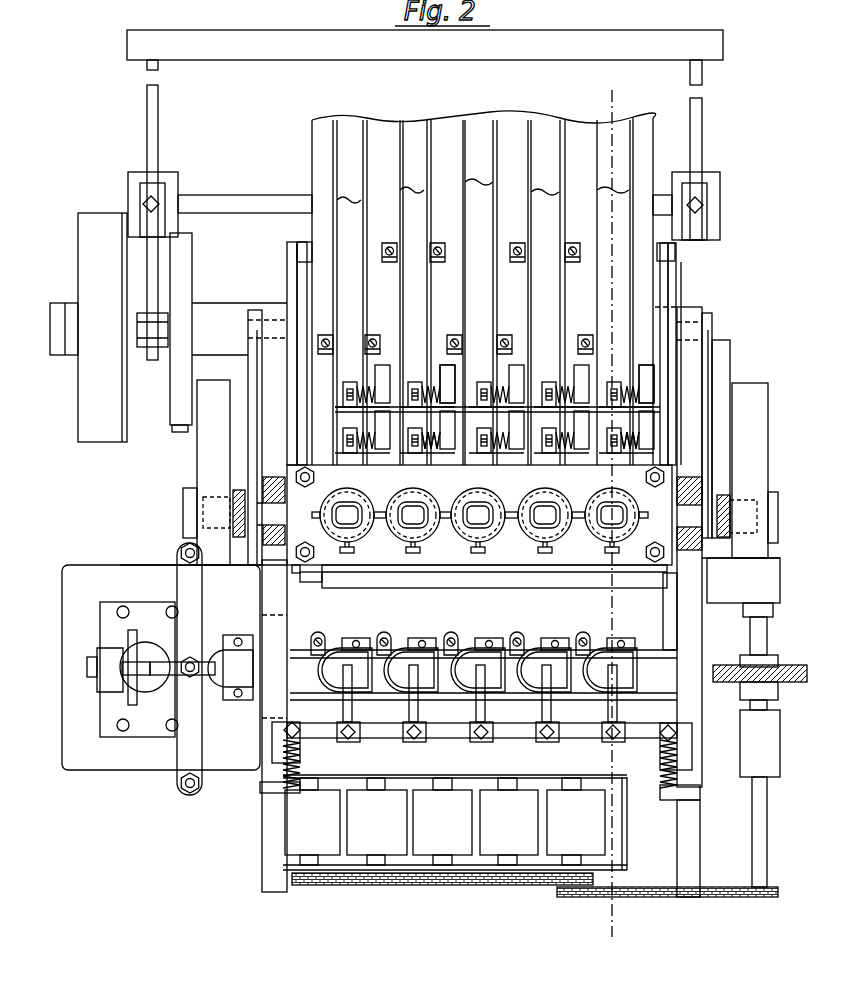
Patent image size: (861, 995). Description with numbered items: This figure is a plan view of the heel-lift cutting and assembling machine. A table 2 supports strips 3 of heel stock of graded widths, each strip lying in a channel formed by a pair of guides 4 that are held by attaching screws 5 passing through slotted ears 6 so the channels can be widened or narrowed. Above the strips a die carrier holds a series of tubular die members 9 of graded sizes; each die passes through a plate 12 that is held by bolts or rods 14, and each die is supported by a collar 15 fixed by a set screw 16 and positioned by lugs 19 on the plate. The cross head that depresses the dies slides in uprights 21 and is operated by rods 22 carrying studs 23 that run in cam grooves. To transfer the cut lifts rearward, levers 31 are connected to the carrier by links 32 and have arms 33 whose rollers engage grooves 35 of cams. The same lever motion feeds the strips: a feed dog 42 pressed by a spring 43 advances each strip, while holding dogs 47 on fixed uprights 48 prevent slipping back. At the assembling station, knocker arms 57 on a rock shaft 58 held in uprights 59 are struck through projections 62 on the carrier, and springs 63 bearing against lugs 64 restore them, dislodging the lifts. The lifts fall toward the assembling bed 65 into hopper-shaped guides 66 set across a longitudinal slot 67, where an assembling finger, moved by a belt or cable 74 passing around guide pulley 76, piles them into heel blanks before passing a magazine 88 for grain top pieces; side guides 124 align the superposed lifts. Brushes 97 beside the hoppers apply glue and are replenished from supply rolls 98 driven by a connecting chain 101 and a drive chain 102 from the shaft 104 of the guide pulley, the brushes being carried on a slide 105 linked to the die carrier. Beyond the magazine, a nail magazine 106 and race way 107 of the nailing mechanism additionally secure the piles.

The table 2 is at (312, 145).
The strips 3 is at (540, 213).
The guides 4 is at (432, 146).
The attaching screws 5 is at (438, 243).
The slotted ears 6 is at (437, 262).
The tubular die members 9 is at (490, 505).
The plate 12 is at (522, 567).
The bolts or rods 14 is at (316, 478).
The collar 15 is at (375, 502).
The set screw 16 is at (423, 549).
The lugs 19 is at (442, 512).
The uprights 21 is at (263, 465).
The rods 22 is at (233, 520).
The studs 23 is at (203, 505).
The levers 31 is at (287, 290).
The links 32 is at (297, 262).
The arms 33 is at (708, 372).
The grooves 35 is at (380, 410).
The feed dog 42 is at (365, 445).
The spring 43 is at (343, 436).
The holding dogs 47 is at (352, 382).
The fixed uprights 48 is at (385, 378).
The knocker arms 57 is at (475, 710).
The rock shaft 58 is at (525, 735).
The uprights 59 is at (272, 738).
The projections 62 is at (300, 577).
The springs 63 is at (283, 760).
The lugs 64 is at (290, 798).
The assembling bed 65 is at (235, 770).
The guides 66 is at (430, 648).
The longitudinal slot 67 is at (688, 655).
The belt or cable 74 is at (780, 670).
The guide pulley 76 is at (785, 665).
The magazine 88 is at (226, 650).
The brushes 97 is at (320, 650).
The supply rolls 98 is at (476, 822).
The connecting chain 101 is at (470, 885).
The drive chain 102 is at (733, 897).
The shaft 104 is at (767, 826).
The frame or slide 105 is at (385, 712).
The nail magazine 106 is at (100, 652).
The race way 107 is at (170, 652).
The side guides 124 is at (390, 640).